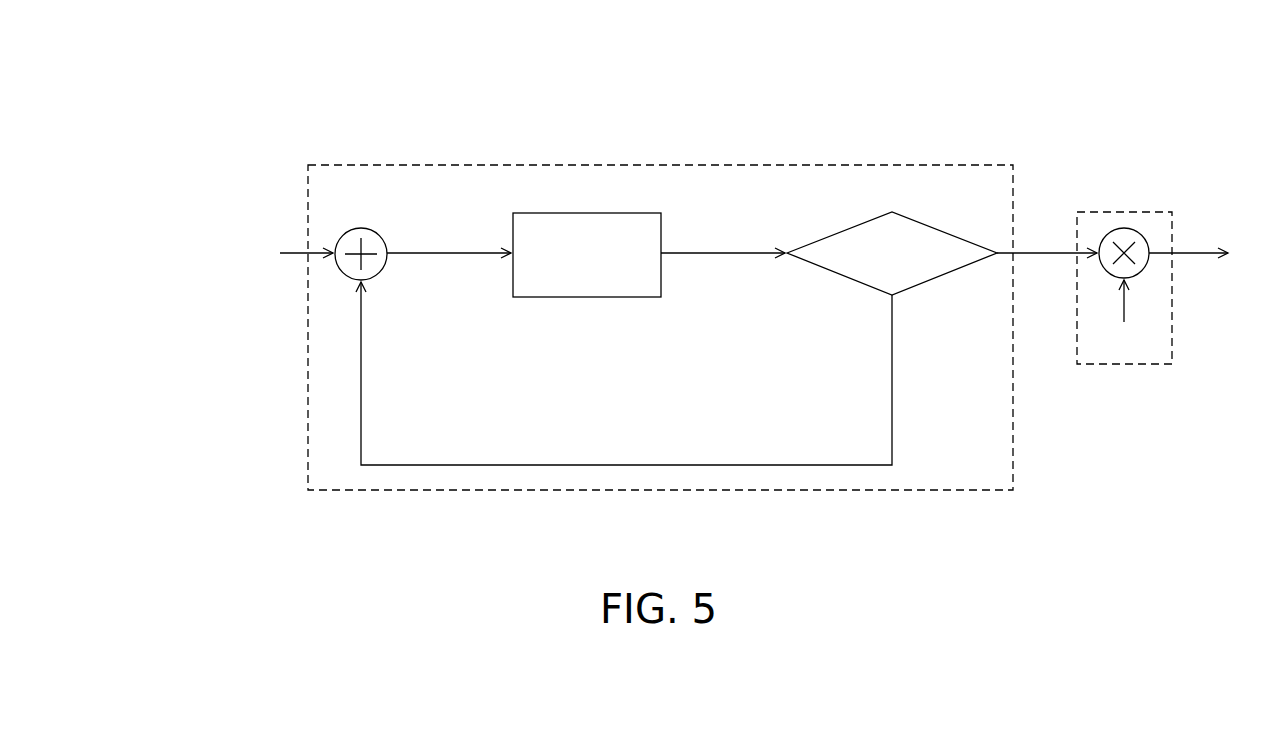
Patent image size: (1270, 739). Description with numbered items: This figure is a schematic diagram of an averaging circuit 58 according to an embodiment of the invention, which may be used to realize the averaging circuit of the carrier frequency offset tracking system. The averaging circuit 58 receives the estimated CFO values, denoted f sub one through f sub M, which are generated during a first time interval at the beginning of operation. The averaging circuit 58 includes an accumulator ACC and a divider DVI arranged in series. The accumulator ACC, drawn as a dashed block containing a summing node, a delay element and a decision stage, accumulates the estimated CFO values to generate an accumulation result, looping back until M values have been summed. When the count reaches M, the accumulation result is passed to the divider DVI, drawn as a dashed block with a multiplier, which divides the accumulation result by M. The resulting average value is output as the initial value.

The averaging circuit 58 is at (233, 122).
The accumulator ACC is at (773, 165).
The divider DVI is at (1139, 213).